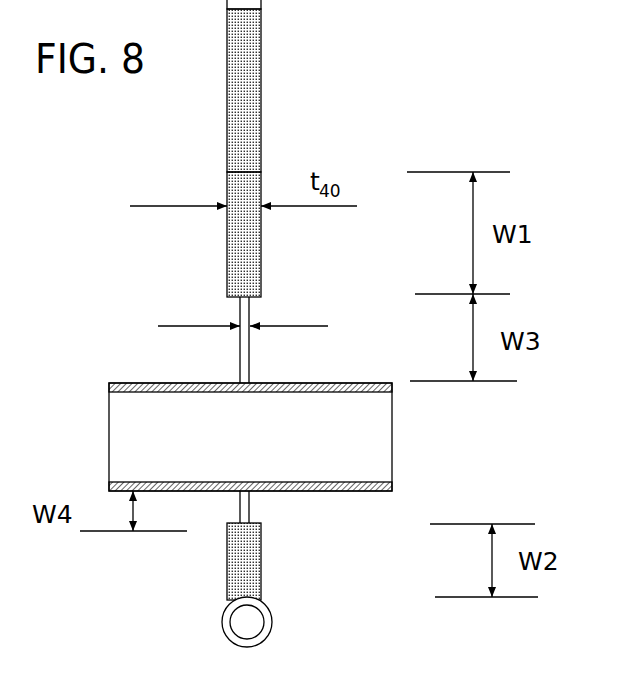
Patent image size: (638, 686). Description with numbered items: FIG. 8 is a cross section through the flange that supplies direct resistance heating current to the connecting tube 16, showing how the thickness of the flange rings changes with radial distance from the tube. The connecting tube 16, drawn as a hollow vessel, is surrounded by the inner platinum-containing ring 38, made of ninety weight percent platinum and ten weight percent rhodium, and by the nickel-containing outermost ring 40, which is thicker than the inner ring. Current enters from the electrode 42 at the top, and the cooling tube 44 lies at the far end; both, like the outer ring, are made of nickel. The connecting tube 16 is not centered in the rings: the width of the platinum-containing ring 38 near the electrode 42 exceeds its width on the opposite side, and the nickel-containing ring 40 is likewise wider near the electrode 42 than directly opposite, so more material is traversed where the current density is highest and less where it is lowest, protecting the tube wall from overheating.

The connecting tube 16 is at (133, 383).
The platinum-containing ring 38 is at (193, 407).
The nickel-containing outermost ring 40 is at (227, 186).
The electrode 42 is at (261, 64).
The cooling tube 44 is at (223, 633).